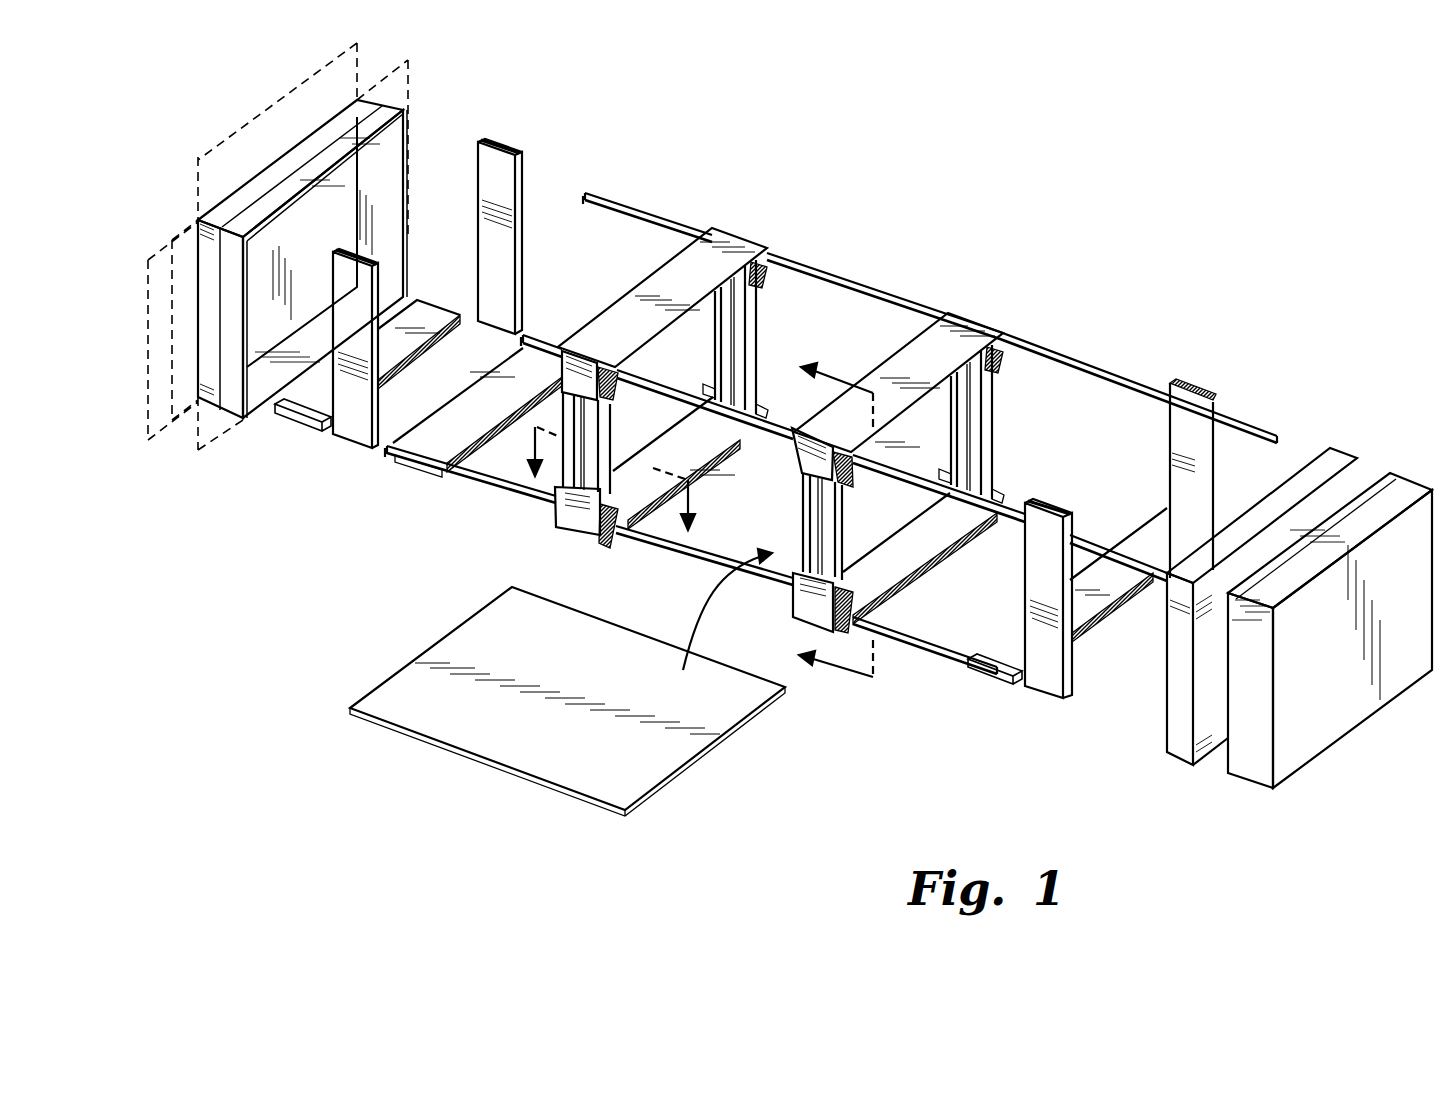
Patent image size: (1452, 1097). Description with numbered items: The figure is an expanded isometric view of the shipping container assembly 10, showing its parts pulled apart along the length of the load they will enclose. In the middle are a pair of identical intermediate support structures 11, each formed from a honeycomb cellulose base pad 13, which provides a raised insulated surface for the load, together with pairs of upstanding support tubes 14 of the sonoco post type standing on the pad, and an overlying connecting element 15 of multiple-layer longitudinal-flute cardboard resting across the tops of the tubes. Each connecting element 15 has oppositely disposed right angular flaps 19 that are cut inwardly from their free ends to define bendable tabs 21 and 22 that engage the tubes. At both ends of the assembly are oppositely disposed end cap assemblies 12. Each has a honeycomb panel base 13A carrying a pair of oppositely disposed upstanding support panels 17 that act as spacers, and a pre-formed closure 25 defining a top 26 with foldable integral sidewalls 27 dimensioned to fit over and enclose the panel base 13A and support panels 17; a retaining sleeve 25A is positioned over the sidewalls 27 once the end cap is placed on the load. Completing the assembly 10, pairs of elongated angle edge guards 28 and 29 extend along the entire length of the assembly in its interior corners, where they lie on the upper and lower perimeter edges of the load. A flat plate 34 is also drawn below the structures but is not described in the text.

The shipping container assembly 10 is at (800, 450).
The intermediate support structure 11 is at (784, 474).
The end cap assembly 12 is at (800, 450).
The honeycomb cellulose base pad 13 is at (415, 463).
The panel base 13A is at (315, 402).
The upstanding support tube 14 is at (740, 299).
The overlying connecting element 15 is at (708, 270).
The upstanding support panel 17 is at (503, 172).
The right angular flap 19 is at (810, 462).
The bendable tab 21 is at (800, 453).
The bendable tab 22 is at (853, 469).
The closure 25 is at (371, 89).
The retaining sleeve 25A is at (1330, 453).
The top 26 is at (287, 223).
The sidewall 27 is at (372, 62).
The angle edge guard 28 is at (850, 275).
The angle edge guard 29 is at (1003, 523).
The base plate 34 is at (495, 725).